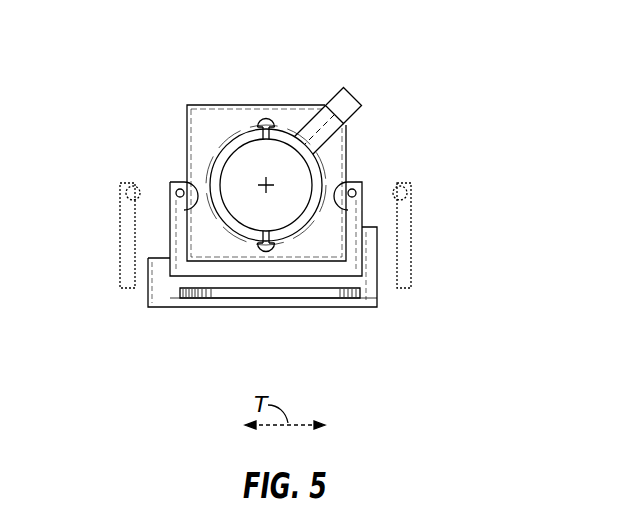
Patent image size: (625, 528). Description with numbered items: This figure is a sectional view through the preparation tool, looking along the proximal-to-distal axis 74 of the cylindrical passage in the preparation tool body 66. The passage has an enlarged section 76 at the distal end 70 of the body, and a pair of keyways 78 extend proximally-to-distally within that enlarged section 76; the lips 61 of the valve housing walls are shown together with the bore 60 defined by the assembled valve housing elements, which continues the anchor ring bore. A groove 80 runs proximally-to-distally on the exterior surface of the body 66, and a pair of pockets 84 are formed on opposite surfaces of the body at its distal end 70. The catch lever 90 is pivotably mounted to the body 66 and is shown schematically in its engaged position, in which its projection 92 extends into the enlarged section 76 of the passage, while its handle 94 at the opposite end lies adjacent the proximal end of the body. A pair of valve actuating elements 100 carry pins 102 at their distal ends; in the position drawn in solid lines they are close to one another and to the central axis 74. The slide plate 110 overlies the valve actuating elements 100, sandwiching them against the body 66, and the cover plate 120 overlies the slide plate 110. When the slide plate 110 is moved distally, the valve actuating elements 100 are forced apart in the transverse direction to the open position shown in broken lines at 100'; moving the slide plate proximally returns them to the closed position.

The bore 60 is at (253, 163).
The lips 61 is at (263, 122).
The preparation tool body 66 is at (198, 98).
The distal end 70 is at (232, 112).
The proximal-to-distal axis 74 is at (268, 187).
The enlarged section 76 is at (212, 173).
The keyways 78 is at (265, 122).
The groove 80 is at (336, 102).
The pockets 84 is at (197, 200).
The catch lever 90 is at (360, 107).
The projection 92 is at (340, 146).
The handle 94 is at (347, 90).
The valve actuating elements 100 is at (265, 235).
The valve actuating elements in open position 100' is at (266, 232).
The pins 102 is at (177, 191).
The slide plate 110 is at (218, 298).
The cover plate 120 is at (338, 308).